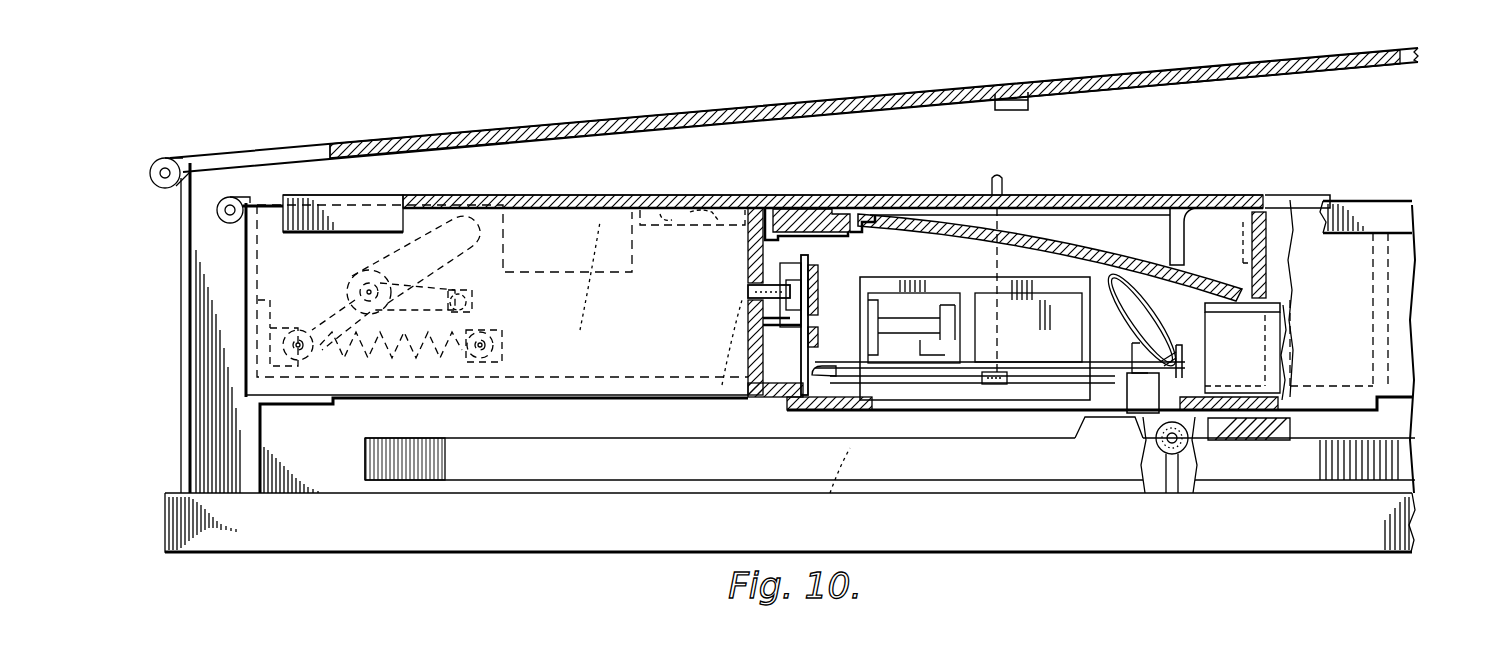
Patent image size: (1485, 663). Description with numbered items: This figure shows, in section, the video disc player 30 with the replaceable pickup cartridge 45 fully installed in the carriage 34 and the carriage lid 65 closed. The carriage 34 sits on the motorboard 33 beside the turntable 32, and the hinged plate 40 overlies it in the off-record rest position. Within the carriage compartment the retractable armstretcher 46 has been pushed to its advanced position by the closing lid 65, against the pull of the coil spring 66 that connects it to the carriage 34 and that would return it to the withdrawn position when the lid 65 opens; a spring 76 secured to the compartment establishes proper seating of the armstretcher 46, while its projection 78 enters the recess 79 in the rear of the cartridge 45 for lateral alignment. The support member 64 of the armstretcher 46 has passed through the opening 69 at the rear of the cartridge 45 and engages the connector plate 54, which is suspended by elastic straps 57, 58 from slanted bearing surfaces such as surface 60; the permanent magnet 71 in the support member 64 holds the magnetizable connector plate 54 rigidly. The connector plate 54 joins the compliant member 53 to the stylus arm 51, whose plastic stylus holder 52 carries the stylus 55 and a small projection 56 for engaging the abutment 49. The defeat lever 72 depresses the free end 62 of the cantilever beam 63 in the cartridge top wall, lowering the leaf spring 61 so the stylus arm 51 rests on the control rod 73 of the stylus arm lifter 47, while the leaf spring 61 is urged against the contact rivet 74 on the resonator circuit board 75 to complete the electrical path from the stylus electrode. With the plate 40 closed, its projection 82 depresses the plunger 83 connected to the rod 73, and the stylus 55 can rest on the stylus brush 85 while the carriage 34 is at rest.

The video disc player 30 is at (1310, 167).
The turntable 32 is at (480, 458).
The motorboard 33 is at (186, 497).
The carriage 34 is at (1432, 296).
The hinged plate 40 is at (746, 108).
The pickup cartridge 45 is at (873, 252).
The armstretcher 46 is at (508, 309).
The stylus arm lifter 47 is at (948, 278).
The abutment 49 is at (1133, 404).
The stylus arm 51 is at (878, 412).
The plastic stylus holder 52 is at (1160, 364).
The compliant member 53 is at (822, 368).
The connector plate 54 is at (815, 310).
The stylus 55 is at (1200, 364).
The small projection 56 is at (1133, 355).
The elastic strap 57 is at (812, 275).
The elastic strap 58 is at (816, 335).
The slanted bearing surface 60 is at (804, 265).
The leaf spring 61 is at (1118, 292).
The free end 62 is at (1268, 272).
The cantilever beam 63 is at (1044, 236).
The support member 64 is at (782, 323).
The carriage lid 65 is at (710, 195).
The coil spring 66 is at (388, 360).
The opening 69 is at (746, 258).
The permanent magnet 71 is at (746, 296).
The defeat lever 72 is at (1186, 250).
The control rod 73 is at (958, 388).
The contact rivet 74 is at (1212, 304).
The resonator circuit board 75 is at (1252, 325).
The spring 76 is at (692, 228).
The projection 78 is at (784, 209).
The recess 79 is at (818, 210).
The projection 82 is at (1020, 112).
The plunger 83 is at (1002, 180).
The stylus brush 85 is at (1188, 446).